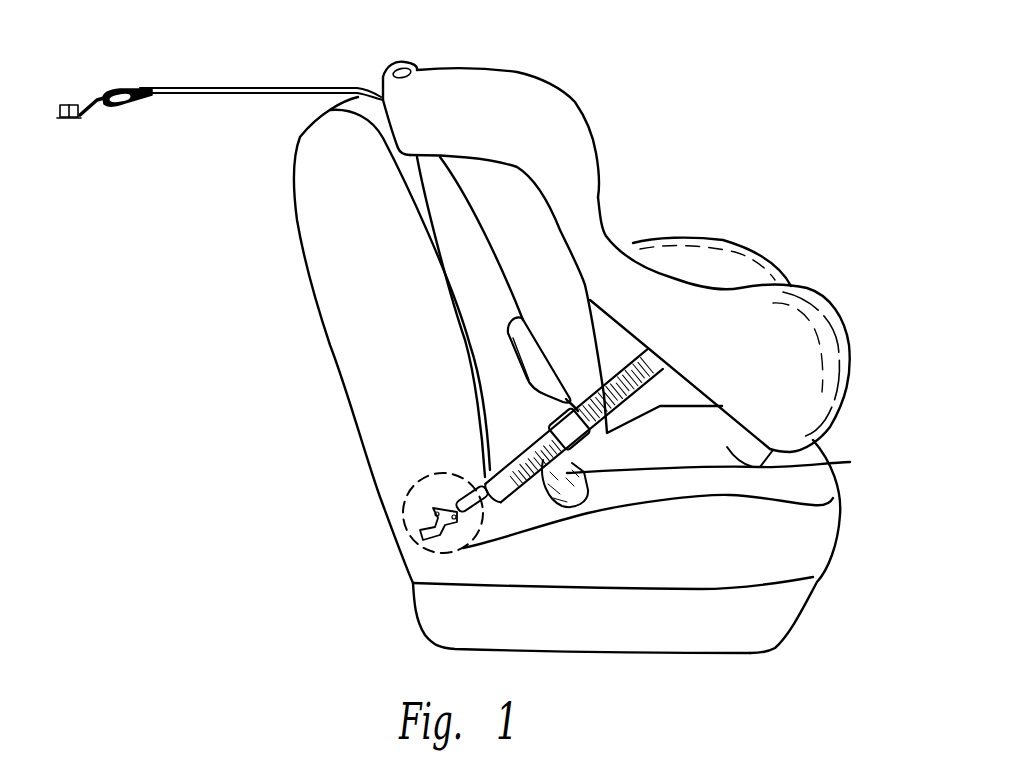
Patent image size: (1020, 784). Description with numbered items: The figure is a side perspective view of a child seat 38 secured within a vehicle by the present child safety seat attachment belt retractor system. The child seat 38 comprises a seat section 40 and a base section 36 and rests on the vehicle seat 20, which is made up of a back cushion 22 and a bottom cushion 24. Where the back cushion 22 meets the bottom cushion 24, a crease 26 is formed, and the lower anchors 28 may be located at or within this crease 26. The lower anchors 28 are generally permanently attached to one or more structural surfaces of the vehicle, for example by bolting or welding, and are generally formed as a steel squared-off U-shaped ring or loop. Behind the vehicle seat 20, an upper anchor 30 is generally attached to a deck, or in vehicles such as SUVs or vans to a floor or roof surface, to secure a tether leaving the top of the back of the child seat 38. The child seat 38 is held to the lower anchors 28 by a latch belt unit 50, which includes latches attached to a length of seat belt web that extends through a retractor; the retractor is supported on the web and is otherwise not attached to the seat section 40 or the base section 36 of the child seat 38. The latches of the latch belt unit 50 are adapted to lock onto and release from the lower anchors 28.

The vehicle seat 20 is at (288, 262).
The back cushion 22 is at (323, 169).
The bottom cushion 24 is at (783, 550).
The crease 26 is at (486, 530).
The lower anchor 28 is at (447, 557).
The upper anchor 30 is at (83, 121).
The base section 36 is at (820, 460).
The child seat 38 is at (716, 268).
The seat section 40 is at (588, 101).
The latch belt unit 50 is at (604, 404).